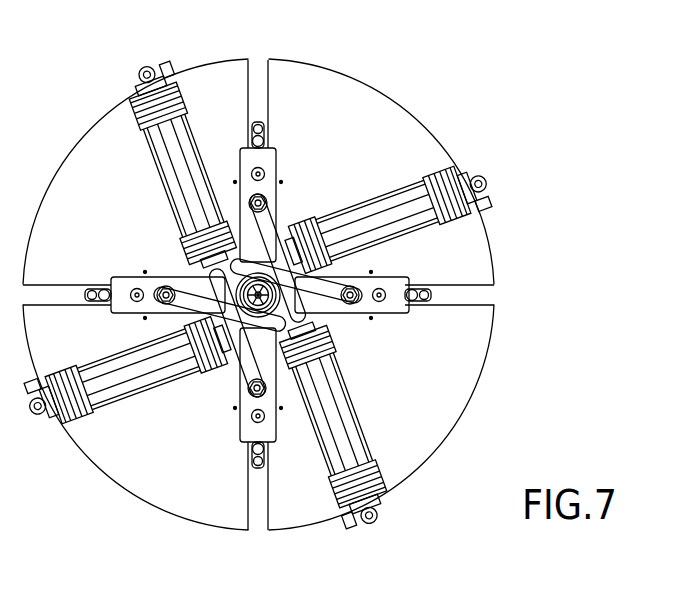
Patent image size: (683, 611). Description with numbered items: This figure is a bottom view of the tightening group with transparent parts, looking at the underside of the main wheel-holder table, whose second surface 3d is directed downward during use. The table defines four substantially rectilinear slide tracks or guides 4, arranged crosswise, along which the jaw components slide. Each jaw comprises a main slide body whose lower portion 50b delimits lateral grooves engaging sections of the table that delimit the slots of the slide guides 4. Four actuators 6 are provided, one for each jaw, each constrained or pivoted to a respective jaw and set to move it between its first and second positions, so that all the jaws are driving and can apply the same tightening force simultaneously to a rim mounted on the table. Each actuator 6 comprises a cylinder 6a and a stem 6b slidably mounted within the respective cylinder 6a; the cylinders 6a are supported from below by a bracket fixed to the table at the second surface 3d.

The second surface 3d is at (462, 368).
The slide tracks or guides 4 is at (258, 80).
The lower portion 50b is at (240, 432).
The actuators 6 is at (150, 140).
The cylinder 6a is at (392, 455).
The stem 6b is at (408, 205).